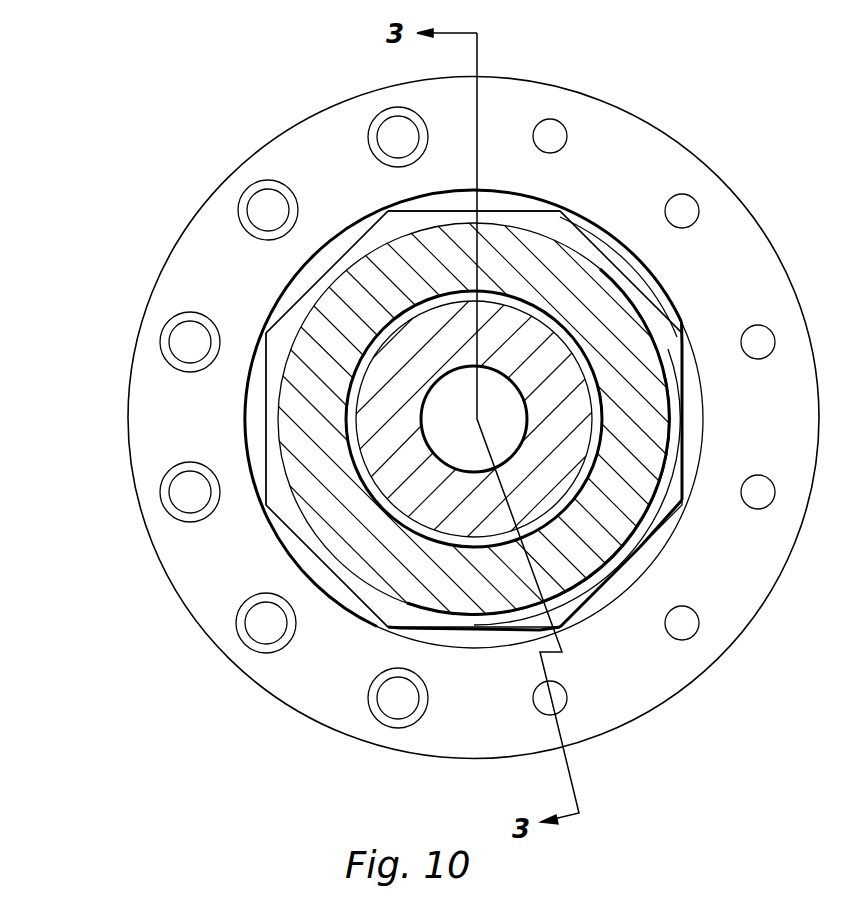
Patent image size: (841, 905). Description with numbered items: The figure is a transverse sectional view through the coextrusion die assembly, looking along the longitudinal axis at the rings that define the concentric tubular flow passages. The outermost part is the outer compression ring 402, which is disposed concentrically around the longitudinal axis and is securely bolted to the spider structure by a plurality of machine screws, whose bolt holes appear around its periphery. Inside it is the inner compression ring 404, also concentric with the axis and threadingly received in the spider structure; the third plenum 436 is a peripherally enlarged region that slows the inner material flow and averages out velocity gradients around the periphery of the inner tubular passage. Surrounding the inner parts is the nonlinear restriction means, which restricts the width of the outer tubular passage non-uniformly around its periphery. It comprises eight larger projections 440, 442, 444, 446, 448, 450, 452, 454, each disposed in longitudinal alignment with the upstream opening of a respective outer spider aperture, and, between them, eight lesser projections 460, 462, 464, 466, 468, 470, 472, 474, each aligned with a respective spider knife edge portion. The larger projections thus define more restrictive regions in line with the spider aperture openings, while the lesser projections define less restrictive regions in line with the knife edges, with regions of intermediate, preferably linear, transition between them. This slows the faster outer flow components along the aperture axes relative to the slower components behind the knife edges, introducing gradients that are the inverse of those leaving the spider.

The outer compression ring 402 is at (786, 294).
The inner compression ring 404 is at (662, 404).
The third plenum 436 is at (569, 343).
The larger projection 440 is at (267, 328).
The larger projection 442 is at (384, 213).
The larger projection 444 is at (568, 220).
The larger projection 446 is at (683, 345).
The larger projection 448 is at (673, 517).
The larger projection 450 is at (558, 633).
The larger projection 452 is at (388, 625).
The larger projection 454 is at (268, 510).
The lesser projection 460 is at (307, 287).
The lesser projection 462 is at (488, 214).
The lesser projection 464 is at (642, 290).
The lesser projection 466 is at (685, 455).
The lesser projection 468 is at (647, 550).
The lesser projection 470 is at (494, 640).
The lesser projection 472 is at (307, 552).
The lesser projection 474 is at (265, 421).